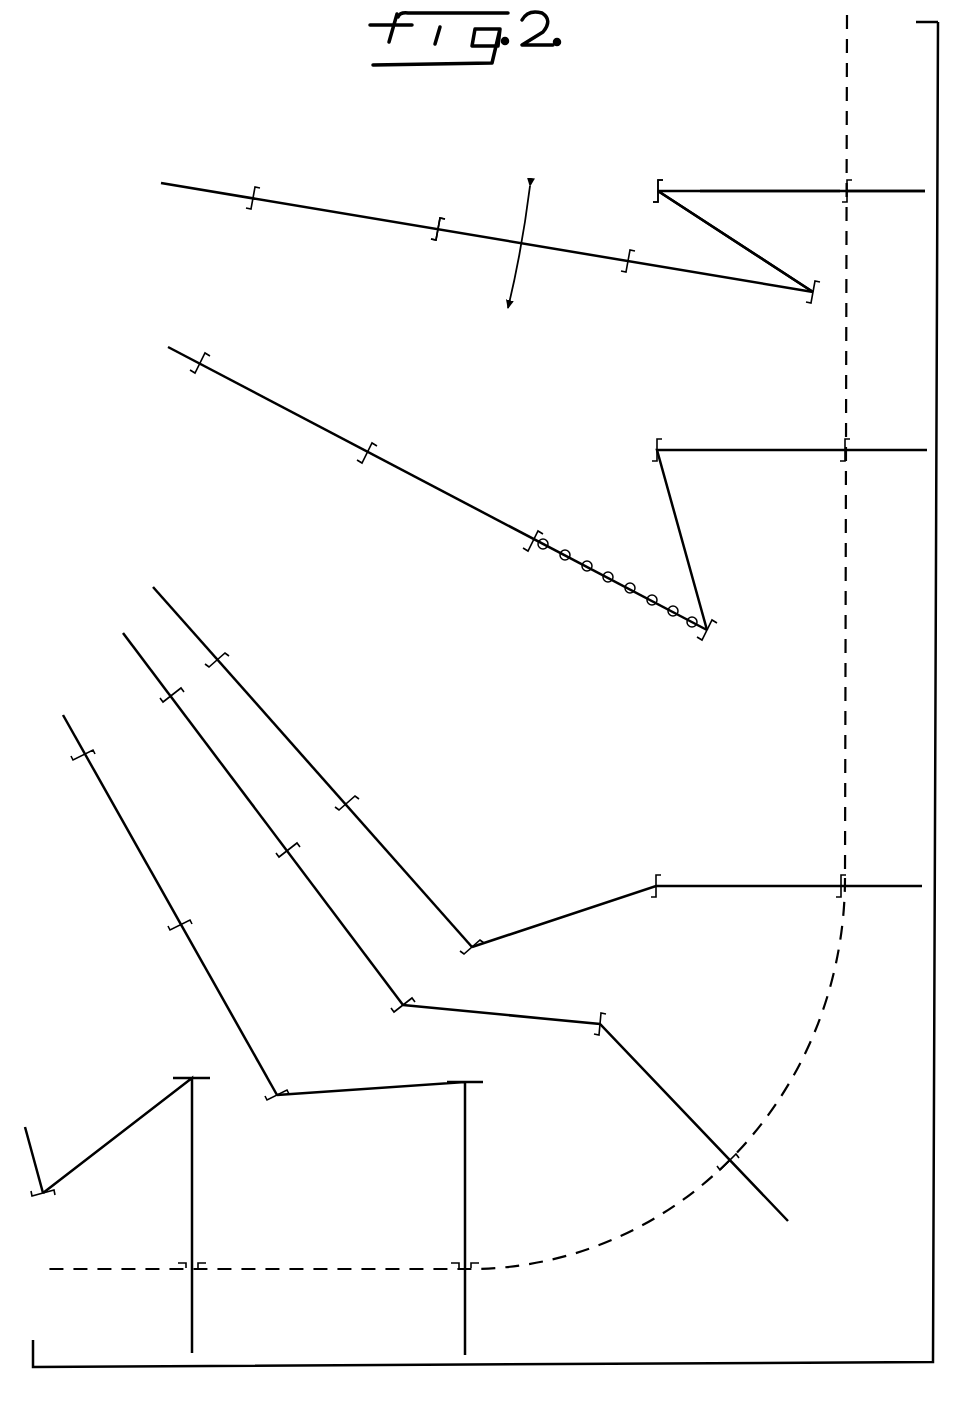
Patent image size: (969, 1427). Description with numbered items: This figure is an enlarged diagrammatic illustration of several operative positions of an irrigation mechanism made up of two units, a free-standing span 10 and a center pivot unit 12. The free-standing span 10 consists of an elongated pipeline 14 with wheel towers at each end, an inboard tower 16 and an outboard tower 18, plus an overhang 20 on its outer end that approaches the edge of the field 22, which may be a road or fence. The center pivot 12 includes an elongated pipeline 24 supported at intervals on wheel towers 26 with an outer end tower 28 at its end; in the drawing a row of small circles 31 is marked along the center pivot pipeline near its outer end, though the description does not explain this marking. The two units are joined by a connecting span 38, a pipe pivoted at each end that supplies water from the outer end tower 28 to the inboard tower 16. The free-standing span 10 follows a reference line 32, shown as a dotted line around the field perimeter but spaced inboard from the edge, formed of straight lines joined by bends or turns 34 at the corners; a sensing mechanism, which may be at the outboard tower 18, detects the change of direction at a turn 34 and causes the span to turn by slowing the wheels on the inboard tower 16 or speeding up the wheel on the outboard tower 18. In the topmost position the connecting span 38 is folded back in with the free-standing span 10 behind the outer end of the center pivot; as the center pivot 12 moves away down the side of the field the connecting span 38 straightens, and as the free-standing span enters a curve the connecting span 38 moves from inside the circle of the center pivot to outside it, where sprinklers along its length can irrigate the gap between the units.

The free-standing span 10 is at (728, 182).
The center pivot unit 12 is at (342, 198).
The elongated pipeline 14 is at (780, 192).
The inboard tower 16 is at (662, 185).
The outboard tower 18 is at (845, 200).
The overhang 20 is at (884, 193).
The edge of the field 22 is at (936, 518).
The elongated pipeline 24 is at (482, 240).
The wheel towers 26 is at (250, 206).
The outer end tower 28 is at (812, 300).
The perforation row 31 is at (610, 592).
The reference line 32 is at (842, 685).
The bends or turns 34 is at (777, 1100).
The connecting span 38 is at (716, 232).